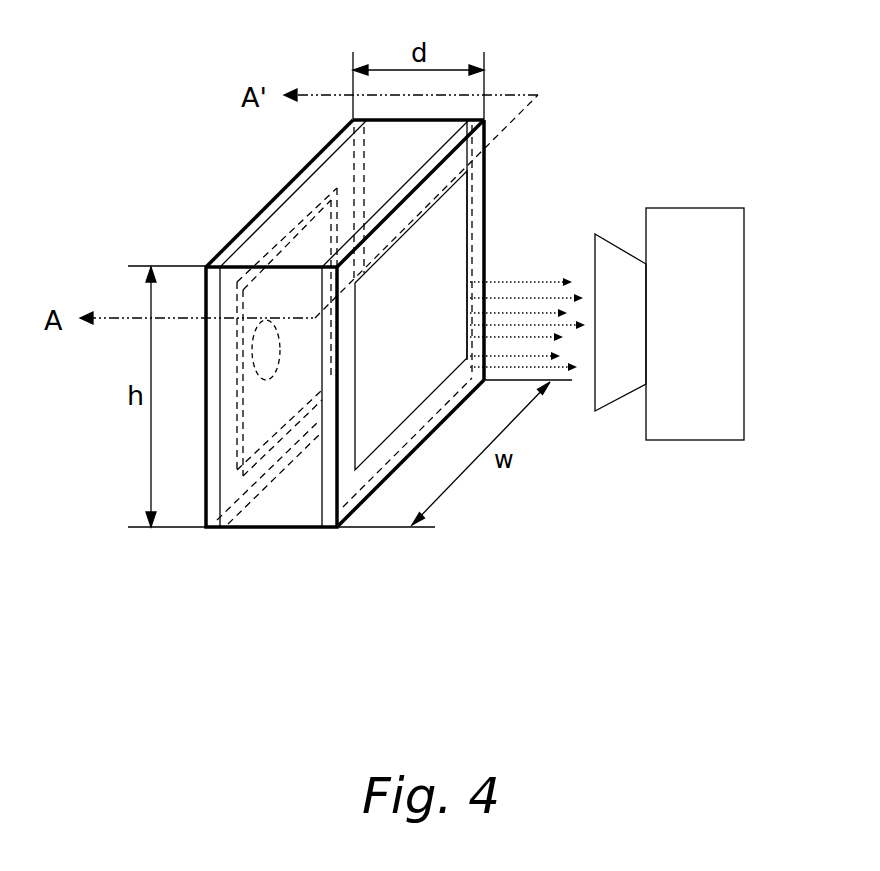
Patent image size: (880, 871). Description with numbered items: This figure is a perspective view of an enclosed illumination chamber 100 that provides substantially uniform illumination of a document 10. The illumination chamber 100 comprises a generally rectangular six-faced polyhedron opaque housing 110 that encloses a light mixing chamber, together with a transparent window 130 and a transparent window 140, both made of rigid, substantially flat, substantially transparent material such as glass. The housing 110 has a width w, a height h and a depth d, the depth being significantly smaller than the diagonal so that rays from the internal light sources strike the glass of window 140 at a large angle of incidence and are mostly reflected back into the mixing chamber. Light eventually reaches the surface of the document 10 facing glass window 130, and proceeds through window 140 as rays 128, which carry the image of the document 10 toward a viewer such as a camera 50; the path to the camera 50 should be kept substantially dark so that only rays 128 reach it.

The illumination chamber 100 is at (490, 158).
The housing 110 is at (332, 497).
The transparent window 130 is at (290, 237).
The document 10 is at (270, 293).
The transparent window 140 is at (380, 420).
The rays 128 is at (518, 282).
The camera 50 is at (698, 235).